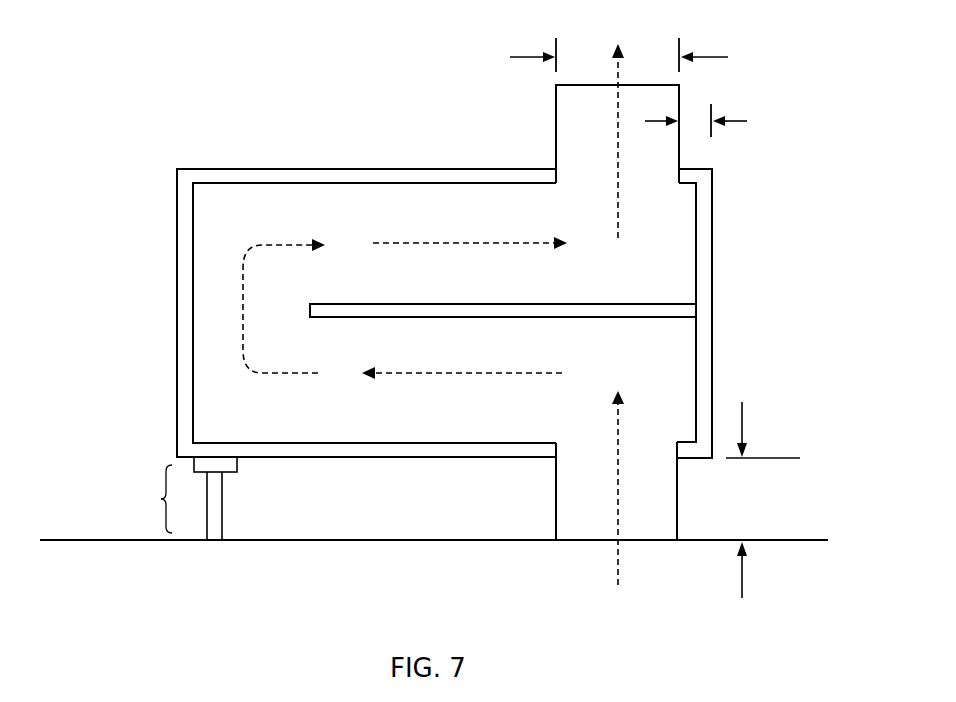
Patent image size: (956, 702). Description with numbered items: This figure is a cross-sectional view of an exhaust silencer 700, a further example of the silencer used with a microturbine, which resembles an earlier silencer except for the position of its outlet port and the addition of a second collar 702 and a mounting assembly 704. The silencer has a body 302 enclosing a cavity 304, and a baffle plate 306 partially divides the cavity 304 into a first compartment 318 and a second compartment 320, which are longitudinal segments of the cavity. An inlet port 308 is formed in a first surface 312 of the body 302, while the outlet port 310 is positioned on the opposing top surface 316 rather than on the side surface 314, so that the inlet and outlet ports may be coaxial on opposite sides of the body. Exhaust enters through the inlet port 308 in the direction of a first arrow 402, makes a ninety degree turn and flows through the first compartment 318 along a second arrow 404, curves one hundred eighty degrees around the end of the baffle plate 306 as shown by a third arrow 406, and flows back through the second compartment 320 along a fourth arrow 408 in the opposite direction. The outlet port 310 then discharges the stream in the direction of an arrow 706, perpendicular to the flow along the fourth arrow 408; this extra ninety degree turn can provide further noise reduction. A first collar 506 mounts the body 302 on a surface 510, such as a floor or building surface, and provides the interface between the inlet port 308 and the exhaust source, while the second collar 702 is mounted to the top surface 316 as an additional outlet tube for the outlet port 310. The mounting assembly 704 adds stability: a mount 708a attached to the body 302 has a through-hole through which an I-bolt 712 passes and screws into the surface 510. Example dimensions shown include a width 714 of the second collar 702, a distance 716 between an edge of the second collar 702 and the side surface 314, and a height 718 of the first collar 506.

The exhaust silencer 700 is at (92, 45).
The body 302 is at (196, 168).
The cavity 304 is at (211, 398).
The baffle plate 306 is at (523, 318).
The inlet port 308 is at (650, 462).
The outlet port 310 is at (645, 176).
The first surface 312 is at (455, 462).
The second surface 314 is at (713, 275).
The top surface 316 is at (347, 165).
The first compartment 318 is at (347, 411).
The second compartment 320 is at (347, 211).
The first arrow 402 is at (615, 573).
The second arrow 404 is at (505, 373).
The third arrow 406 is at (296, 243).
The fourth arrow 408 is at (513, 243).
The collar 506 is at (553, 527).
The surface 510 is at (797, 537).
The second collar 702 is at (549, 140).
The mounting assembly 704 is at (156, 502).
The arrow 706 is at (616, 78).
The mount 708a is at (222, 472).
The I-bolt 712 is at (225, 520).
The width 714 is at (708, 52).
The distance 716 is at (738, 115).
The height 718 is at (742, 410).